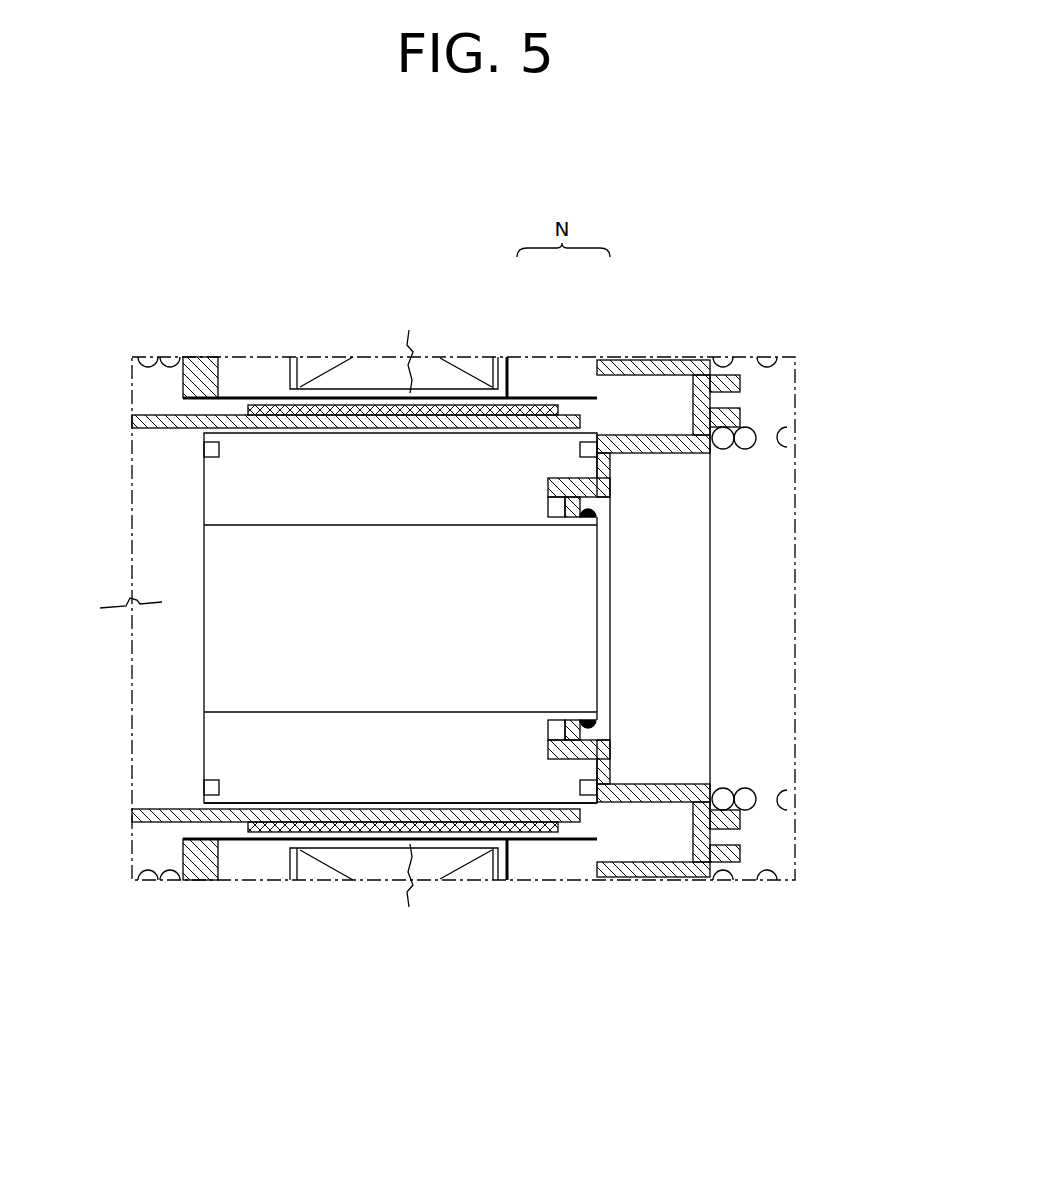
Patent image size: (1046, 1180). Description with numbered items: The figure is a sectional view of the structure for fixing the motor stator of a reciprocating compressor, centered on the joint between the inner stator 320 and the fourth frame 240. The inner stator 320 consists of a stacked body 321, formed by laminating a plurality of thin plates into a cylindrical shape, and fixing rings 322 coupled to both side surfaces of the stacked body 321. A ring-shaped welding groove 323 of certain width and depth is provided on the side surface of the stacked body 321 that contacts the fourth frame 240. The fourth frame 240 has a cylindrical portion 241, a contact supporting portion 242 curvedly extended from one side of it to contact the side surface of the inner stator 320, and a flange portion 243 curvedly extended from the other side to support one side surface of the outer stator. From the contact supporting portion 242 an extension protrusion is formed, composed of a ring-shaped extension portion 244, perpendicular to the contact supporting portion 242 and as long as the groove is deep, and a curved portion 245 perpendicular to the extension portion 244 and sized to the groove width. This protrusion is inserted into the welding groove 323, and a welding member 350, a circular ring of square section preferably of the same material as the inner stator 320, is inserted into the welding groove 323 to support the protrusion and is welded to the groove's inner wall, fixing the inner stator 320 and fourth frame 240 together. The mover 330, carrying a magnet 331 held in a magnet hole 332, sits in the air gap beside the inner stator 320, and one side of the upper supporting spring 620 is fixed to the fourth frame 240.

The fourth frame 240 is at (720, 680).
The cylindrical portion 241 is at (672, 453).
The contact supporting portion 242 is at (605, 470).
The flange portion 243 is at (703, 372).
The extension portion 244 is at (575, 478).
The curved portion 245 is at (550, 496).
The inner stator 320 is at (185, 469).
The stacked body 321 is at (342, 803).
The fixing rings 322 is at (588, 795).
The welding groove 323 is at (563, 760).
The mover 330 is at (240, 405).
The magnet 331 is at (442, 404).
The magnet hole 332 is at (493, 409).
The welding member 350 is at (594, 714).
The upper supporting spring 620 is at (792, 801).